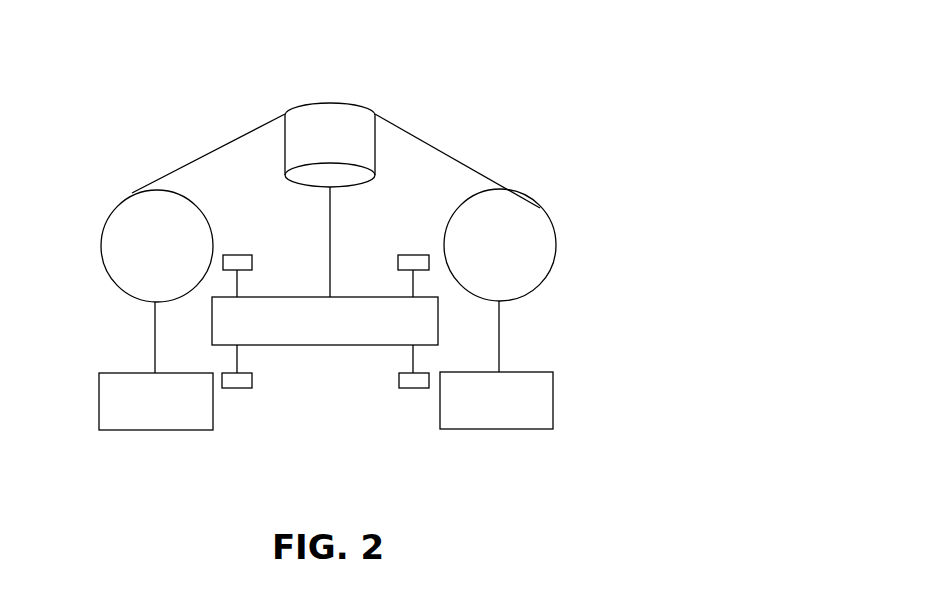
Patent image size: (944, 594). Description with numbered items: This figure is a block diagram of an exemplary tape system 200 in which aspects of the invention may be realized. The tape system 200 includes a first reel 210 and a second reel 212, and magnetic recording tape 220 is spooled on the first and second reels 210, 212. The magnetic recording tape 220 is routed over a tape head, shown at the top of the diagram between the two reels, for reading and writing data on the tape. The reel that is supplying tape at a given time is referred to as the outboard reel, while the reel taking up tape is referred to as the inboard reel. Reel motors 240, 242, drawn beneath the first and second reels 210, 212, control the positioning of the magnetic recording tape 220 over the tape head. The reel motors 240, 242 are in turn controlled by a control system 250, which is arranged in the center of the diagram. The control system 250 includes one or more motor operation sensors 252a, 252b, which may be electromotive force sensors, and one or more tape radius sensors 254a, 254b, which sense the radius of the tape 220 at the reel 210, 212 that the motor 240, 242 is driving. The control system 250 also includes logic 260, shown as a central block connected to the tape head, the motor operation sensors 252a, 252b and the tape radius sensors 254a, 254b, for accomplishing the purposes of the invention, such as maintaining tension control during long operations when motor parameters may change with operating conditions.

The tape system 200 is at (572, 68).
The first reel 210 is at (101, 246).
The second reel 212 is at (556, 249).
The magnetic recording tape 220 is at (435, 149).
The reel motor 240 is at (99, 401).
The reel motor 242 is at (553, 400).
The control system 250 is at (352, 436).
The motor operation sensor 252a is at (237, 388).
The motor operation sensor 252b is at (412, 388).
The tape radius sensor 254a is at (234, 255).
The tape radius sensor 254b is at (413, 255).
The logic 260 is at (312, 188).